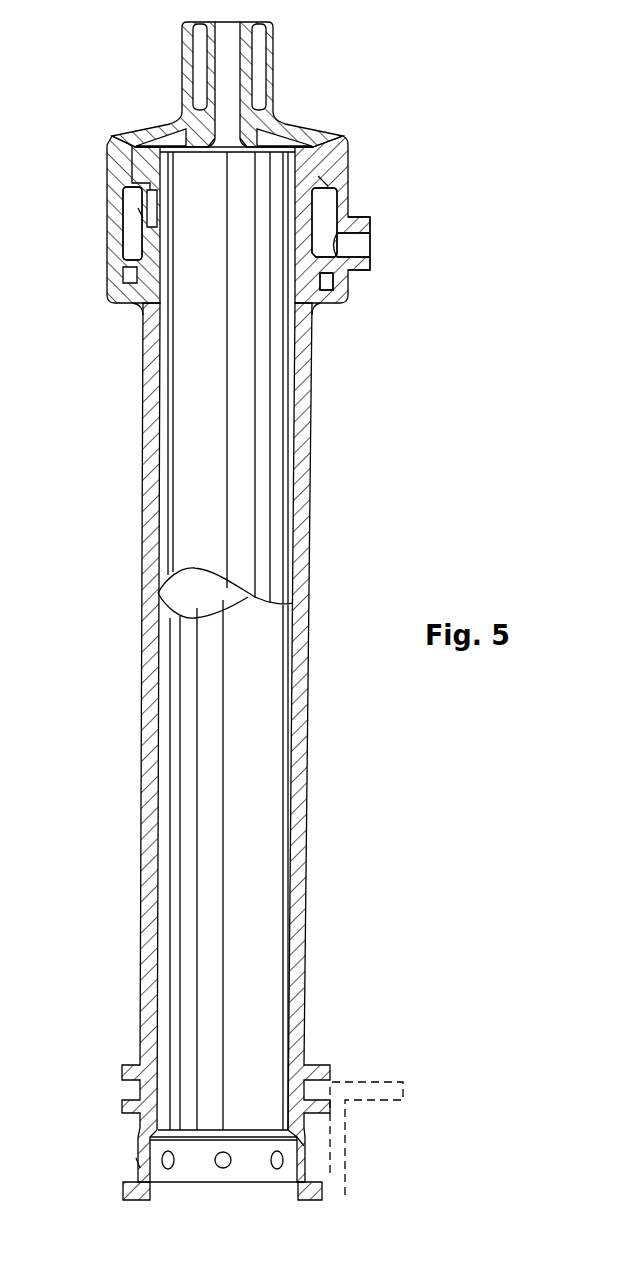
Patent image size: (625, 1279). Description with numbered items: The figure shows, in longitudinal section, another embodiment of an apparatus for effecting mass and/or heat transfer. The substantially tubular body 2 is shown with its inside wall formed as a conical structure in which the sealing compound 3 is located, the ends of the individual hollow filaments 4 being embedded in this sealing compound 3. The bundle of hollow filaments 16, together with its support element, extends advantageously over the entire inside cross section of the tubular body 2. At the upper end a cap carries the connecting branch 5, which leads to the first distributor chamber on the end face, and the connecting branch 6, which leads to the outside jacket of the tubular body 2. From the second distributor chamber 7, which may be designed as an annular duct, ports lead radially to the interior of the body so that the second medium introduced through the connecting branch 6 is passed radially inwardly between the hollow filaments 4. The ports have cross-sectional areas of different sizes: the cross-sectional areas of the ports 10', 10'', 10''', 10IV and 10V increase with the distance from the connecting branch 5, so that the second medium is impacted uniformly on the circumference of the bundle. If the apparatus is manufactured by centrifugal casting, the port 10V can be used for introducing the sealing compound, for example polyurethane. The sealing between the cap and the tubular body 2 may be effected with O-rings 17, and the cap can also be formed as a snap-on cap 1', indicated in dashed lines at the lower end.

The snap-on cap 1' is at (383, 1139).
The tubular body 2 is at (302, 362).
The sealing compound 3 is at (133, 147).
The hollow filaments 4 is at (265, 473).
The connecting branch 5 is at (258, 77).
The connecting branch 6 is at (360, 220).
The second distributor chamber 7 is at (298, 128).
The port 10' is at (352, 644).
The port 10'' is at (336, 1161).
The port 10''' is at (319, 1178).
The port 10IV is at (165, 1155).
The port 10V is at (86, 1190).
The bundle of hollow filaments 16 is at (180, 590).
The O-rings 17 is at (332, 282).